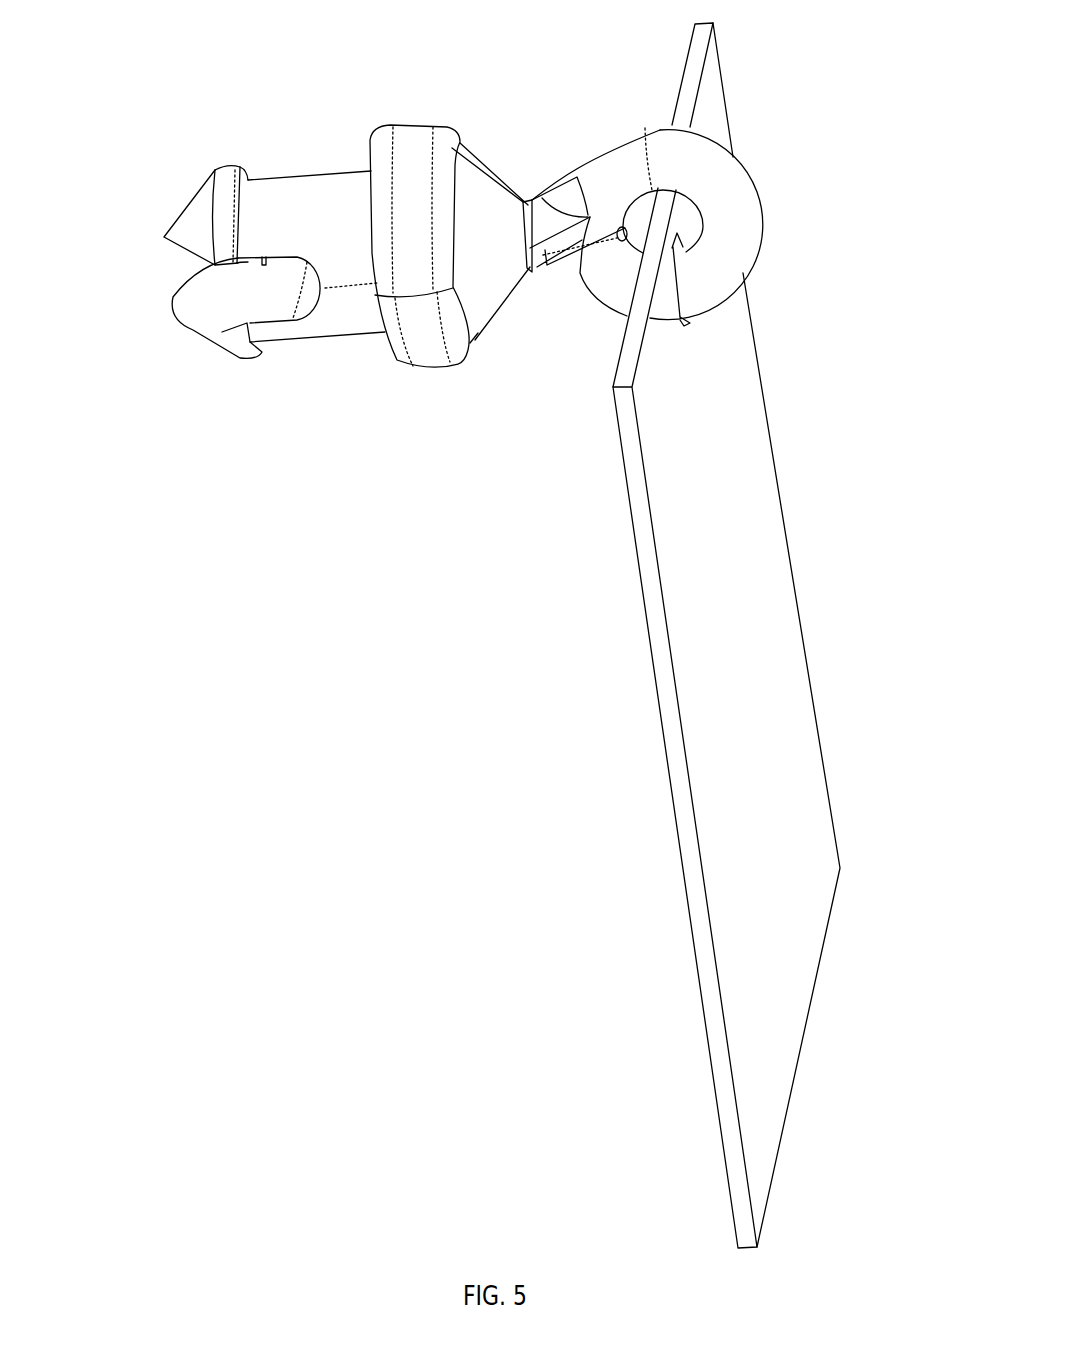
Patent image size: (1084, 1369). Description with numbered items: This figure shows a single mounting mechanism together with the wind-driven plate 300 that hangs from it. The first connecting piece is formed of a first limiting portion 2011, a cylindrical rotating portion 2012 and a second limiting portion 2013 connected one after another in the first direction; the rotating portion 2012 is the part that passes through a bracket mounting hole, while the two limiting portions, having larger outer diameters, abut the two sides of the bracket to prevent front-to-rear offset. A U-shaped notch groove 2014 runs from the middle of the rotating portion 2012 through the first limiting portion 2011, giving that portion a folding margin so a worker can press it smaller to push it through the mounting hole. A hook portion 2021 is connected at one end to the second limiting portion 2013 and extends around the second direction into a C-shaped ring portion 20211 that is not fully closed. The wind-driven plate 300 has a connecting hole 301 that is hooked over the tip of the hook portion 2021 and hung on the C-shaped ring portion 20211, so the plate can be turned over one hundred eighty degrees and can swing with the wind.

The first limiting portion 2011 is at (222, 187).
The rotating portion 2012 is at (317, 180).
The second limiting portion 2013 is at (413, 148).
The U-shaped notch groove 2014 is at (243, 290).
The hook portion 2021 is at (610, 167).
The C-shaped ring portion 20211 is at (737, 195).
The connecting hole 301 is at (690, 322).
The wind-driven plate 300 is at (640, 500).